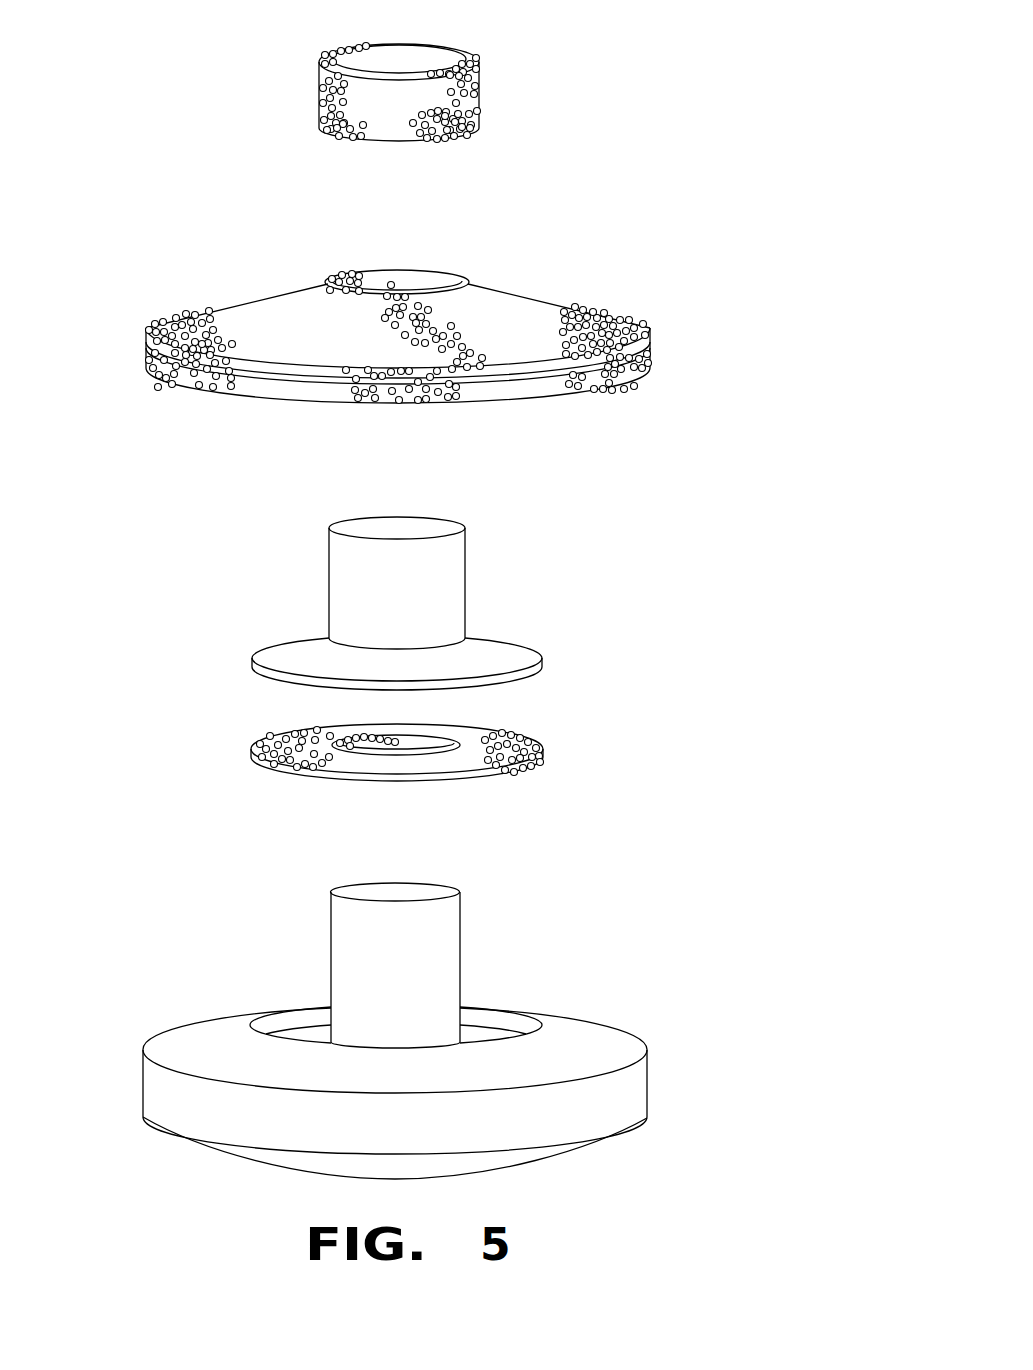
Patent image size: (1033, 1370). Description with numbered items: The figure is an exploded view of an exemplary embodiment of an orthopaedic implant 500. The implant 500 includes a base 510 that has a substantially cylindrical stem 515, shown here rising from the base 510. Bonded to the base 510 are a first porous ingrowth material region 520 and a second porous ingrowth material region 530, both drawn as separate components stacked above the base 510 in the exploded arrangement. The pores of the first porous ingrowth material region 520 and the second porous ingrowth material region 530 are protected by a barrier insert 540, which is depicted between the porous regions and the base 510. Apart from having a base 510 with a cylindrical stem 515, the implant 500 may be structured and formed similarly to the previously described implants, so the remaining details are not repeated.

The implant 500 is at (656, 172).
The base 510 is at (638, 1093).
The cylindrical stem 515 is at (453, 943).
The first porous ingrowth material region 520 is at (666, 312).
The second porous ingrowth material region 530 is at (495, 87).
The barrier insert 540 is at (490, 614).